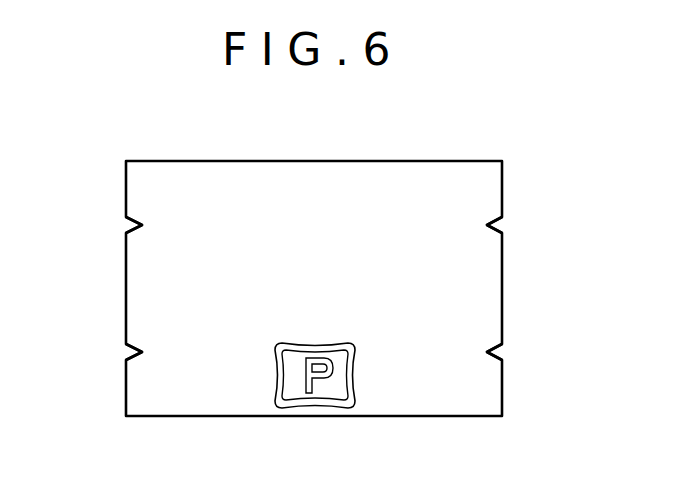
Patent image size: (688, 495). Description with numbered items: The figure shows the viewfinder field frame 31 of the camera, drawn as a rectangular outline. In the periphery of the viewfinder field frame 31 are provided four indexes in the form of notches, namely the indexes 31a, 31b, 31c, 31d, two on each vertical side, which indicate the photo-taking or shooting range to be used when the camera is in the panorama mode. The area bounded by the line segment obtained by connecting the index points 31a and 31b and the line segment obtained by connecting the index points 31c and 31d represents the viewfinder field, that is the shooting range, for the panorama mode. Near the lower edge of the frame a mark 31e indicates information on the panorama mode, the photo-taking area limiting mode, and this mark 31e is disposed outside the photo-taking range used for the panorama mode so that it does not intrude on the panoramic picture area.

The viewfinder field frame 31 is at (490, 157).
The index 31a is at (500, 226).
The index 31b is at (126, 227).
The index 31c is at (500, 352).
The index 31d is at (128, 351).
The mark 31e is at (355, 392).